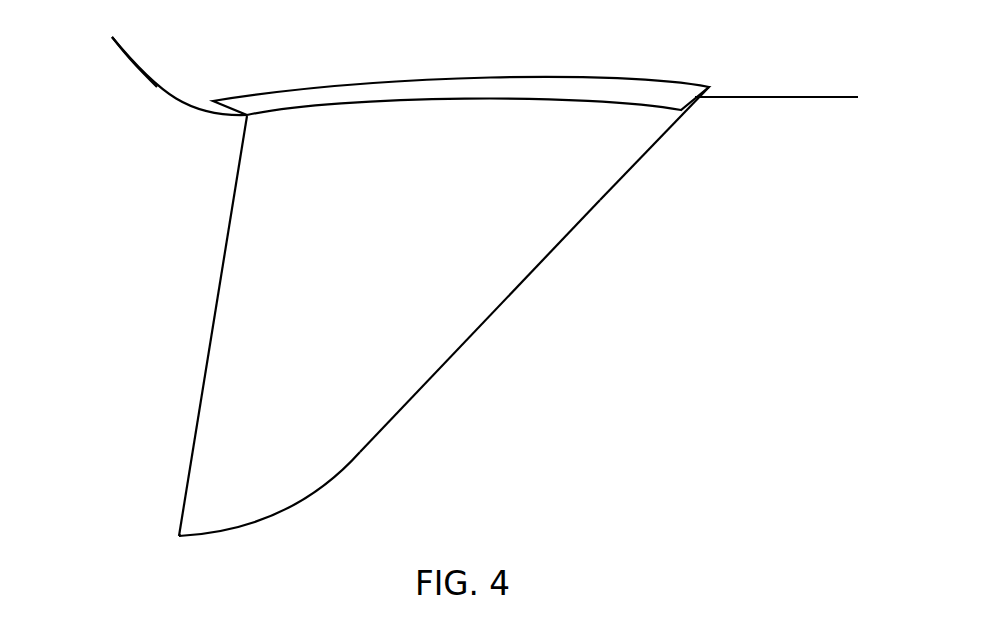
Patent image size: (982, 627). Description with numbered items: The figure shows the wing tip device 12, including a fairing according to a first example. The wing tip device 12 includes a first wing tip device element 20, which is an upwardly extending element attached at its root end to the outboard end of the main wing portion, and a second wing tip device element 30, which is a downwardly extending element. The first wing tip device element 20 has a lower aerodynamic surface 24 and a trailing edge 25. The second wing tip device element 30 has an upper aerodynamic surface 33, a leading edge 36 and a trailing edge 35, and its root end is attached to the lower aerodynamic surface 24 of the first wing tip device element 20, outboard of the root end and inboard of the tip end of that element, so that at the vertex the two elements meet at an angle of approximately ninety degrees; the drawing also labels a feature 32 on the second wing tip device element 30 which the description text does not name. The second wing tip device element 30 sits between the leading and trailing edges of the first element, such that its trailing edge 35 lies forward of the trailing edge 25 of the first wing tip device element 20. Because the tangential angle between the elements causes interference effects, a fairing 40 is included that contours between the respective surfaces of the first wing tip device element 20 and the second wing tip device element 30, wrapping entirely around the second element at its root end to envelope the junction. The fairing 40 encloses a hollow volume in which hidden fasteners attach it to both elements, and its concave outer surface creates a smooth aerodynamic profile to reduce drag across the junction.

The wing tip device 12 is at (414, 336).
The first wing tip device element 20 is at (785, 77).
The lower aerodynamic surface 24 is at (168, 67).
The trailing edge 25 is at (120, 53).
The second wing tip device element 30 is at (338, 443).
The slat leading edge 32 is at (177, 536).
The upper aerodynamic surface 33 is at (430, 312).
The trailing edge 35 is at (215, 278).
The leading edge 36 is at (643, 175).
The fairing 40 is at (487, 85).